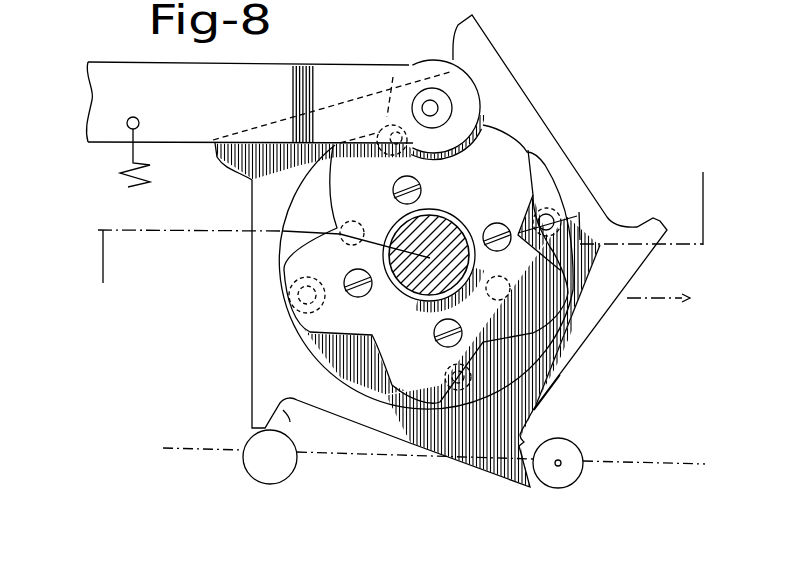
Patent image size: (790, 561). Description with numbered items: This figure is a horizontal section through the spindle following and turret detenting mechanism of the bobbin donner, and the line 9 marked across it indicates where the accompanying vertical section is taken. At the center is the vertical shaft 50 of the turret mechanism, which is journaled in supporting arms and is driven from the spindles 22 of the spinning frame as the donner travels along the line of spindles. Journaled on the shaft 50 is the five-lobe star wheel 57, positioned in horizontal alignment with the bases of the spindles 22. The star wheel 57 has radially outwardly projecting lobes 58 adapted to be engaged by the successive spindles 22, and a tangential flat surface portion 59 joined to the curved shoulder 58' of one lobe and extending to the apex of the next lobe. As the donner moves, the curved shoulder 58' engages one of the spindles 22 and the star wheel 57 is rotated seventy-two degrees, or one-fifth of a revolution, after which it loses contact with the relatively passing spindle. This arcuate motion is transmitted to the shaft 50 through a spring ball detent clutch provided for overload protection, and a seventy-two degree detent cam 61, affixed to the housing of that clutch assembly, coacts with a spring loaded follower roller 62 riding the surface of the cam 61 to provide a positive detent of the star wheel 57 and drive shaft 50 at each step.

The section line 9- 9 is at (386, 237).
The spindles 22 is at (576, 480).
The vertical shaft 50 is at (435, 237).
The five-lobe star wheel 57 is at (552, 383).
The lobes 58 is at (434, 260).
The curved shoulder 58' is at (441, 425).
The tangential flat surface portion 59 is at (535, 409).
The detent cam 61 is at (515, 158).
The spring loaded follower roller 62 is at (325, 72).